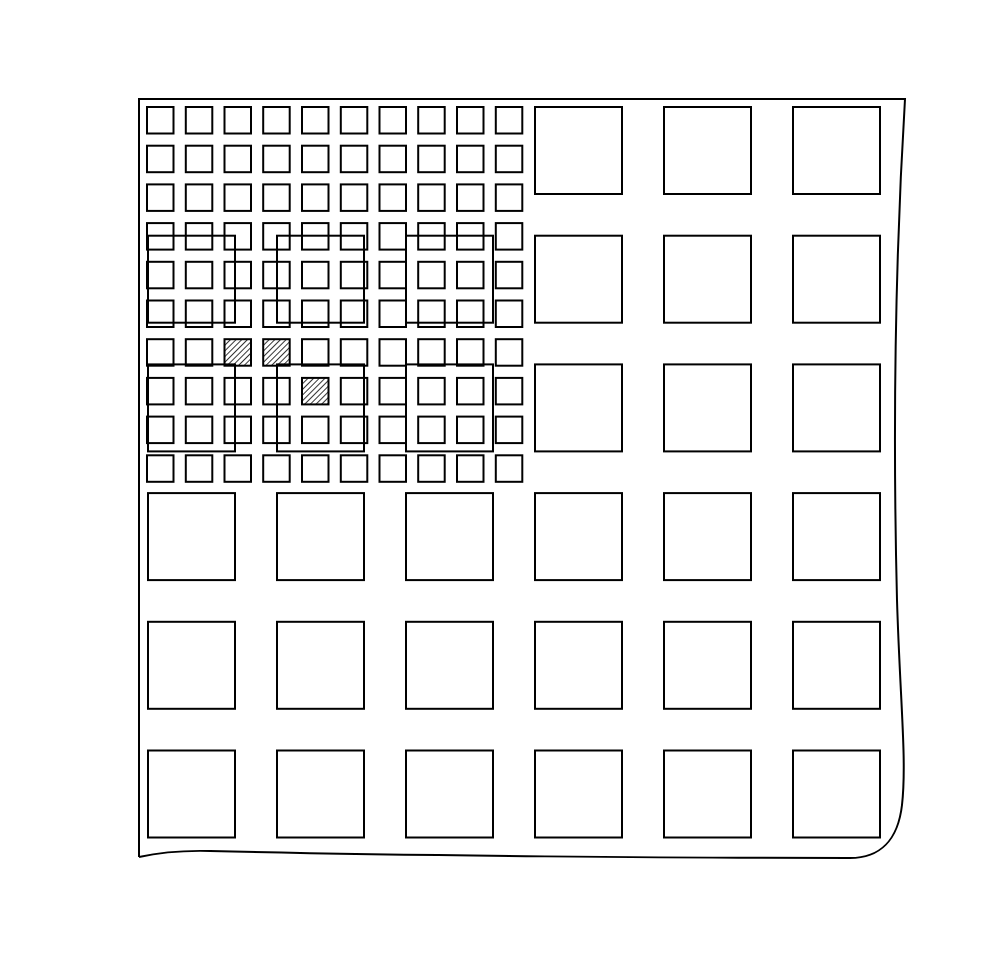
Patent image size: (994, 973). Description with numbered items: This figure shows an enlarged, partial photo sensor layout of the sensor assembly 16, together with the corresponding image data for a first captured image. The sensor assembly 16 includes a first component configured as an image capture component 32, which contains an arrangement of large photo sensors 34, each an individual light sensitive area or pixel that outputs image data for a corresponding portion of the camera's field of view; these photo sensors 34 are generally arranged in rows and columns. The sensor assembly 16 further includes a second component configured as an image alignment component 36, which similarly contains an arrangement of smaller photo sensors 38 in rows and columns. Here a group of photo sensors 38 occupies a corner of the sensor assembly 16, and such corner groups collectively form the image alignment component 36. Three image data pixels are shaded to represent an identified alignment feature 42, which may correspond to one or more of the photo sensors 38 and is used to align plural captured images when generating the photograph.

The sensor assembly 16 is at (354, 98).
The image capture component 32 is at (456, 443).
The photo sensor 34 is at (694, 125).
The image alignment component 36 is at (284, 260).
The photo sensor 38 is at (163, 114).
The alignment feature 42 is at (222, 333).